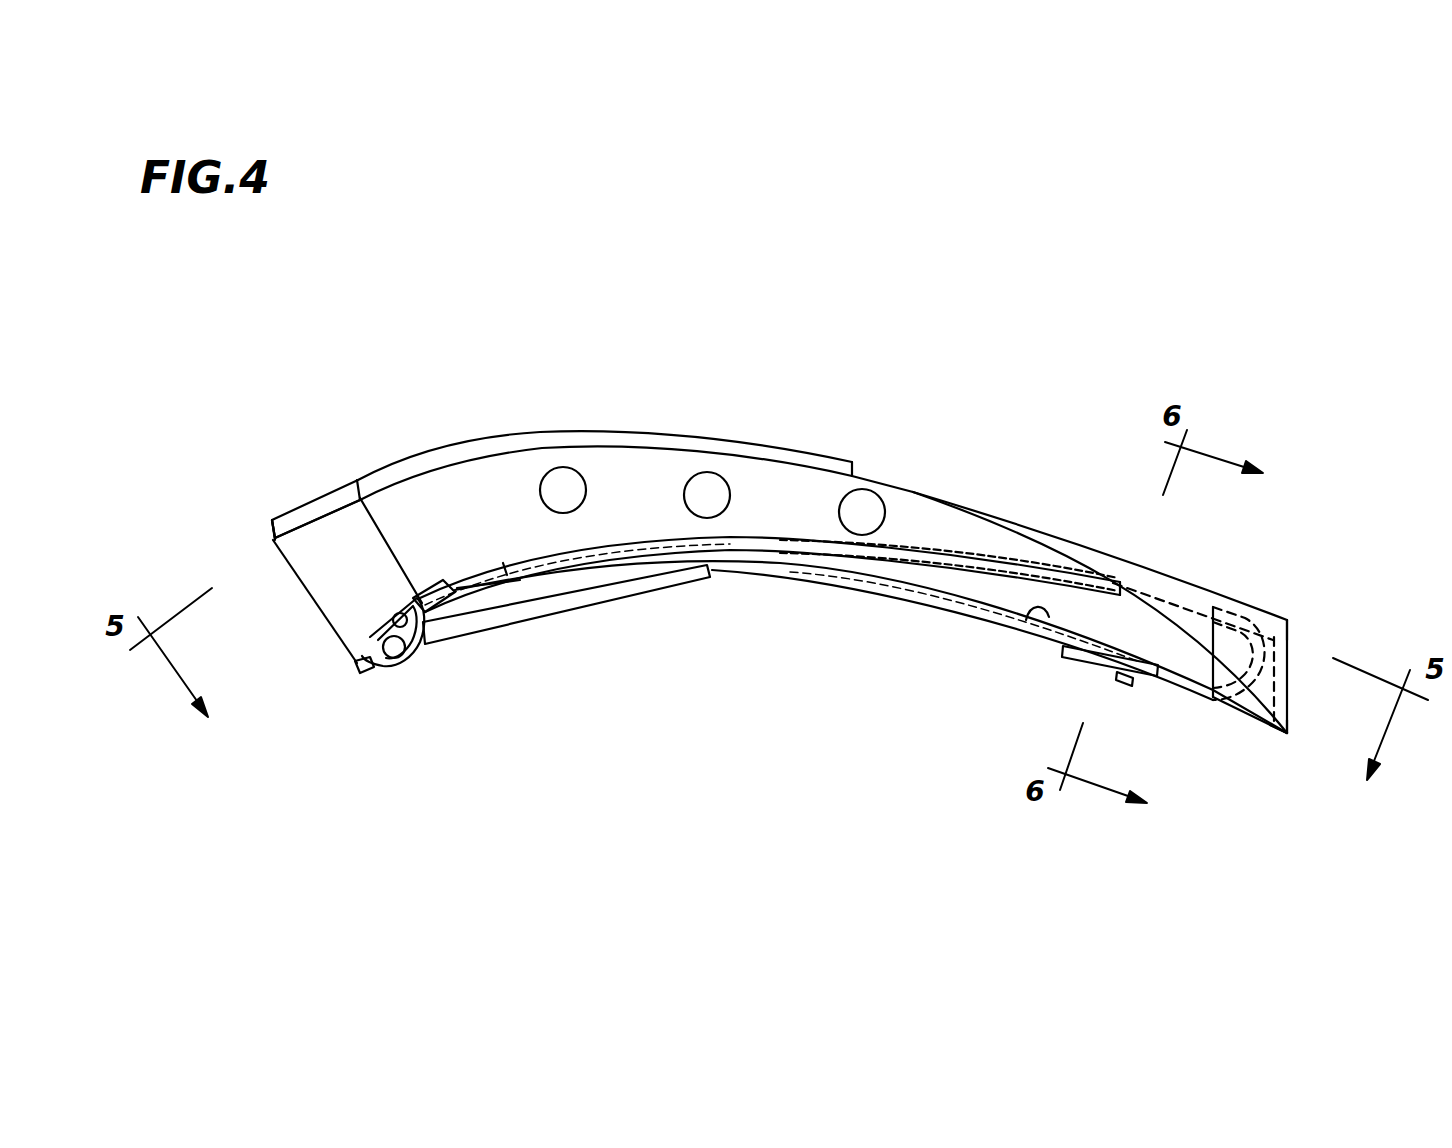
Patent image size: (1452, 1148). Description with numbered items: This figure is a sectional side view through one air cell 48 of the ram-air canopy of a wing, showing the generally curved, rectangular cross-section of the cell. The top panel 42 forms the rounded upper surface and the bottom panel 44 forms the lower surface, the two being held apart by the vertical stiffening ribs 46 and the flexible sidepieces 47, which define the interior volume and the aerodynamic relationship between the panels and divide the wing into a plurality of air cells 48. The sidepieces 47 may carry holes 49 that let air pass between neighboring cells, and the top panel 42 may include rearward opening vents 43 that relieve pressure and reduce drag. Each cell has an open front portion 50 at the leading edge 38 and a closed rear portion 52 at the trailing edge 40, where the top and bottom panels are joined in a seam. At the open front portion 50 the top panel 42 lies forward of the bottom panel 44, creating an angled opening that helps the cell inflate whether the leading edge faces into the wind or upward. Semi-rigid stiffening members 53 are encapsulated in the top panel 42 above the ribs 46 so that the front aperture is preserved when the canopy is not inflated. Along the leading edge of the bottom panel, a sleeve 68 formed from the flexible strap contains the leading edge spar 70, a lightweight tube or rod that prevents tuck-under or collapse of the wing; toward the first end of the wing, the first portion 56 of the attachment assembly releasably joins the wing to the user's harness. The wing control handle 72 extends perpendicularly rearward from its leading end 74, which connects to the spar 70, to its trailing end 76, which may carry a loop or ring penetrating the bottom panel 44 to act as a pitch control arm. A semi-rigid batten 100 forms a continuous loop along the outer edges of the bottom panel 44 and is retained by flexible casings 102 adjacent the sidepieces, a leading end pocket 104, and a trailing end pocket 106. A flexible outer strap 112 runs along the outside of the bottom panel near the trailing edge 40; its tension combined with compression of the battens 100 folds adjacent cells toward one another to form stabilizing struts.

The leading edge 38 is at (272, 533).
The trailing edge 40 is at (1290, 673).
The top panel 42 is at (540, 440).
The rearward opening vents 43 is at (870, 462).
The bottom panel 44 is at (893, 600).
The vertical stiffening ribs 46 is at (335, 530).
The flexible sidepieces 47 is at (455, 485).
The air cells 48 is at (812, 330).
The holes 49 is at (710, 470).
The open front portion 50 is at (302, 587).
The closed rear portion 52 is at (1290, 673).
The stiffening members 53 is at (293, 517).
The first portion 56 is at (382, 630).
The leading edge stiffening member sleeve 68 is at (394, 660).
The leading edge spar 70 is at (374, 668).
The wing control handle 72 is at (605, 597).
The leading end 74 is at (443, 660).
The trailing end 76 is at (775, 577).
The batten 100 is at (982, 550).
The flexible casings 102 is at (1030, 612).
The leading end pocket 104 is at (340, 640).
The trailing end pocket 106 is at (1230, 680).
The flexible outer strap 112 is at (1073, 653).